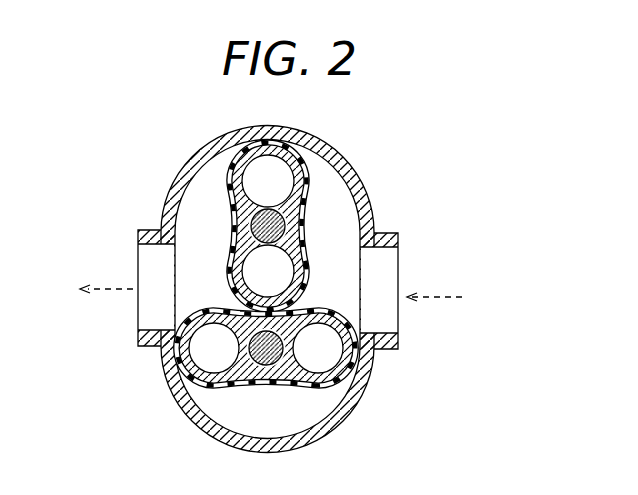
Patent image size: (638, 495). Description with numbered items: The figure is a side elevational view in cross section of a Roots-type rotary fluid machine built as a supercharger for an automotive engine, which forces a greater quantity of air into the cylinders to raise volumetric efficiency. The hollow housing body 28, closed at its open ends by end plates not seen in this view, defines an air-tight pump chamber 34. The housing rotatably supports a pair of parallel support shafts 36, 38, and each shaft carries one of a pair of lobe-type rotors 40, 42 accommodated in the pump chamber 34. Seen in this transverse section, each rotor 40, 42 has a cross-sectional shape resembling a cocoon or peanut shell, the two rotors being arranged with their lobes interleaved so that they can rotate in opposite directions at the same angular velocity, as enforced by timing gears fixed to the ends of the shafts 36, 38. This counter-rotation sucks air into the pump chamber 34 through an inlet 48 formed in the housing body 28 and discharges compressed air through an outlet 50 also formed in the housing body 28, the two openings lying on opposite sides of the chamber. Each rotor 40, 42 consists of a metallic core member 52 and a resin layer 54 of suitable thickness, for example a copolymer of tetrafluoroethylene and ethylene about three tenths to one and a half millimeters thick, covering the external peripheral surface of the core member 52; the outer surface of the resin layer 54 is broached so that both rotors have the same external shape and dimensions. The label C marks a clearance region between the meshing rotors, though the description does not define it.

The hollow housing body 28 is at (221, 154).
The pump chamber 34 is at (193, 187).
The support shaft 36 is at (252, 237).
The support shaft 38 is at (283, 343).
The lobe-type rotor 40 is at (322, 170).
The lobe-type rotor 42 is at (313, 393).
The inlet 48 is at (378, 248).
The outlet 50 is at (160, 245).
The metallic core member 52 is at (288, 252).
The resin layer 54 is at (303, 224).
The clearance between rotors C is at (238, 308).